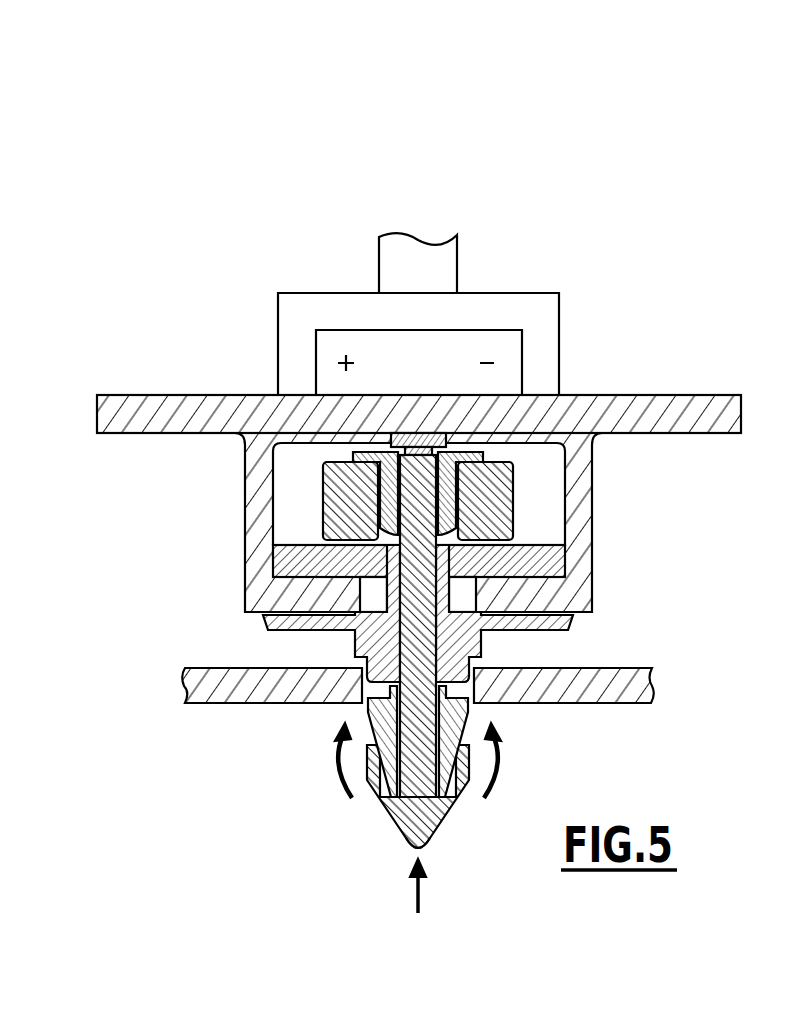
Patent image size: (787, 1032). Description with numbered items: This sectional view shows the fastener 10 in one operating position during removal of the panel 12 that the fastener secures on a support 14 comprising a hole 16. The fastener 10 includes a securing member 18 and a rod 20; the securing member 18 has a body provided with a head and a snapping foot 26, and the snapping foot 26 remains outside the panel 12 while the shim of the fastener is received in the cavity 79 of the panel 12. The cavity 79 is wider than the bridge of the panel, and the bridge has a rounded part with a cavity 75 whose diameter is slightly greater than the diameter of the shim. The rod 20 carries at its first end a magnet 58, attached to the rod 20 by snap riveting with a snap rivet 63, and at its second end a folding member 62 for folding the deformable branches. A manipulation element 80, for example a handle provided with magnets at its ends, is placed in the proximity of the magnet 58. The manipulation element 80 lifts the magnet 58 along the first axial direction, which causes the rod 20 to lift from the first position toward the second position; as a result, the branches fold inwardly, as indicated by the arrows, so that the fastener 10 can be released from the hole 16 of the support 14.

The fastener 10 is at (616, 575).
The panel 12 is at (686, 410).
The support 14 is at (645, 683).
The hole 16 is at (328, 734).
The securing member 18 is at (453, 558).
The rod 20 is at (440, 715).
The snapping foot 26 is at (365, 710).
The magnet 58 is at (510, 483).
The folding member 62 is at (430, 838).
The snap rivet 63 is at (395, 434).
The cavity 75 is at (462, 593).
The cavity 79 is at (317, 498).
The manipulation element 80 is at (505, 348).